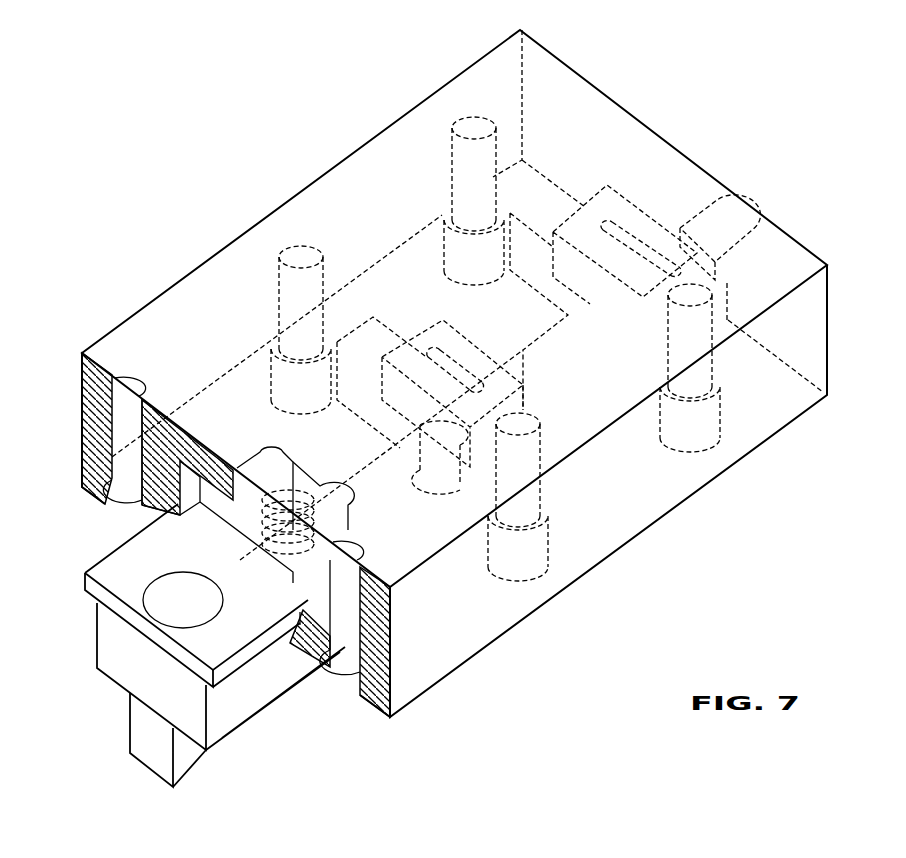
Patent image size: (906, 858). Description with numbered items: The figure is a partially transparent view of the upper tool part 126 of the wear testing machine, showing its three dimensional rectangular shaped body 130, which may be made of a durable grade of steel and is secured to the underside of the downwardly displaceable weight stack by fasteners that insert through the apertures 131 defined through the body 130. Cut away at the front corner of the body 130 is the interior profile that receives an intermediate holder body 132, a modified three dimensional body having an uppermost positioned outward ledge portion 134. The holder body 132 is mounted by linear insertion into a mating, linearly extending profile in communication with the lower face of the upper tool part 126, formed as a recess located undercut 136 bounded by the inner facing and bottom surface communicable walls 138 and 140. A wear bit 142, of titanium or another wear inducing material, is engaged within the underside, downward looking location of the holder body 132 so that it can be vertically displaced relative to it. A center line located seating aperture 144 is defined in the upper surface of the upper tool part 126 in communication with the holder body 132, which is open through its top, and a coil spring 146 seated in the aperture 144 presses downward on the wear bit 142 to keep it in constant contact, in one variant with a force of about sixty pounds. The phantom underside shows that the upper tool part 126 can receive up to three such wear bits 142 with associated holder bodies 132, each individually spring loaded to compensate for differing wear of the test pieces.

The upper tool part 126 is at (201, 166).
The rectangular shaped body 130 is at (585, 553).
The apertures 131 is at (285, 298).
The intermediate holder body 132 is at (117, 660).
The outward ledge portion 134 is at (85, 590).
The linearly extending undercut 136 is at (300, 613).
The inner facing wall 138 is at (198, 710).
The bottom surface communicable wall 140 is at (283, 650).
The wear bit 142 is at (138, 735).
The seating aperture 144 is at (262, 518).
The coil spring 146 is at (287, 508).